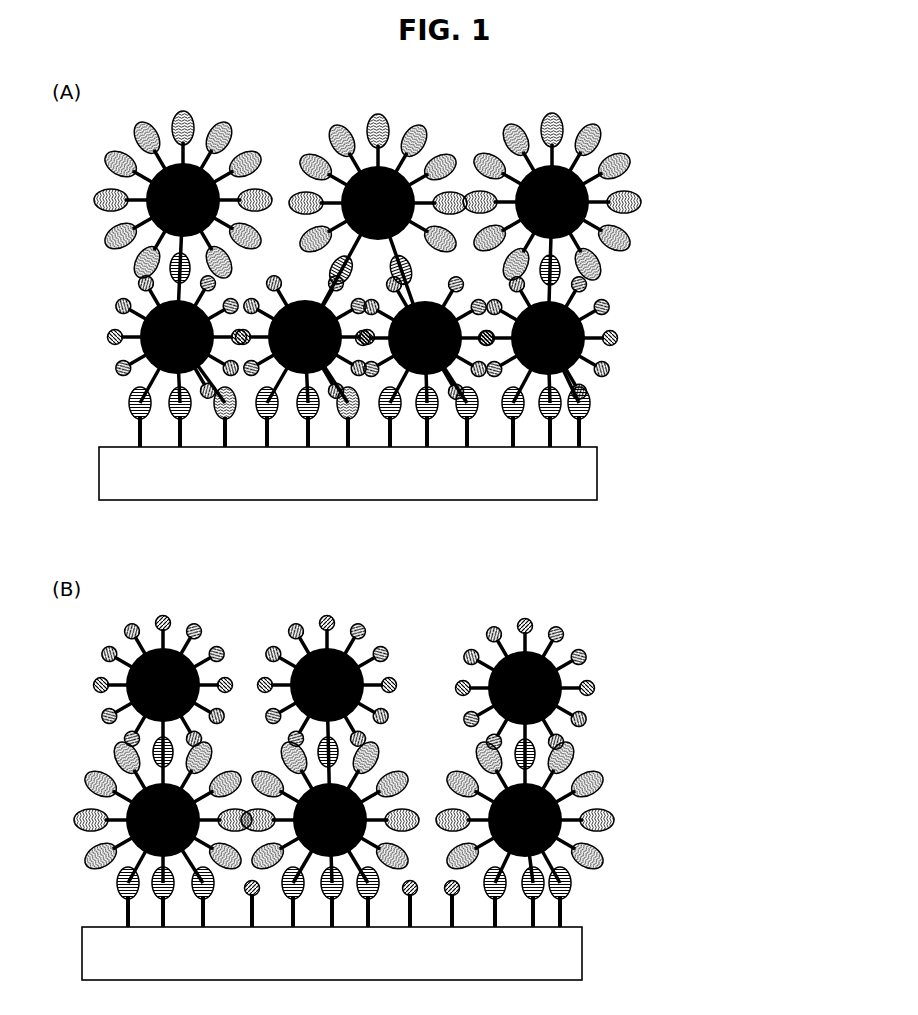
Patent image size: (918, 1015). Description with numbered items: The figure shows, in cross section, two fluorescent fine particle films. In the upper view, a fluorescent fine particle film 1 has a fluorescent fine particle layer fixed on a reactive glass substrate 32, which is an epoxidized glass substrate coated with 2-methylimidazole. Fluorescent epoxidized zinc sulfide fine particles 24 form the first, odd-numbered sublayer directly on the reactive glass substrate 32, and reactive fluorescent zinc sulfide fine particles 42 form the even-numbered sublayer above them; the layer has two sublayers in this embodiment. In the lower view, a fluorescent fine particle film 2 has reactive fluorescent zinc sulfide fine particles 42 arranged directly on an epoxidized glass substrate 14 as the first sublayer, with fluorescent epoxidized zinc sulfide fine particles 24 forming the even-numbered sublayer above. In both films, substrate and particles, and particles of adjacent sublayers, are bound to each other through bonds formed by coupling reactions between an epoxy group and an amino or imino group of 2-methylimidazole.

The fluorescent fine particle film 1 is at (455, 328).
The fluorescent fine particle film 2 is at (446, 814).
The epoxidized glass substrate 14 is at (607, 928).
The fluorescent epoxidized zinc sulfide fine particles 24 is at (613, 323).
The reactive glass substrate 32 is at (617, 448).
The reactive fluorescent zinc sulfide fine particles 42 is at (628, 133).